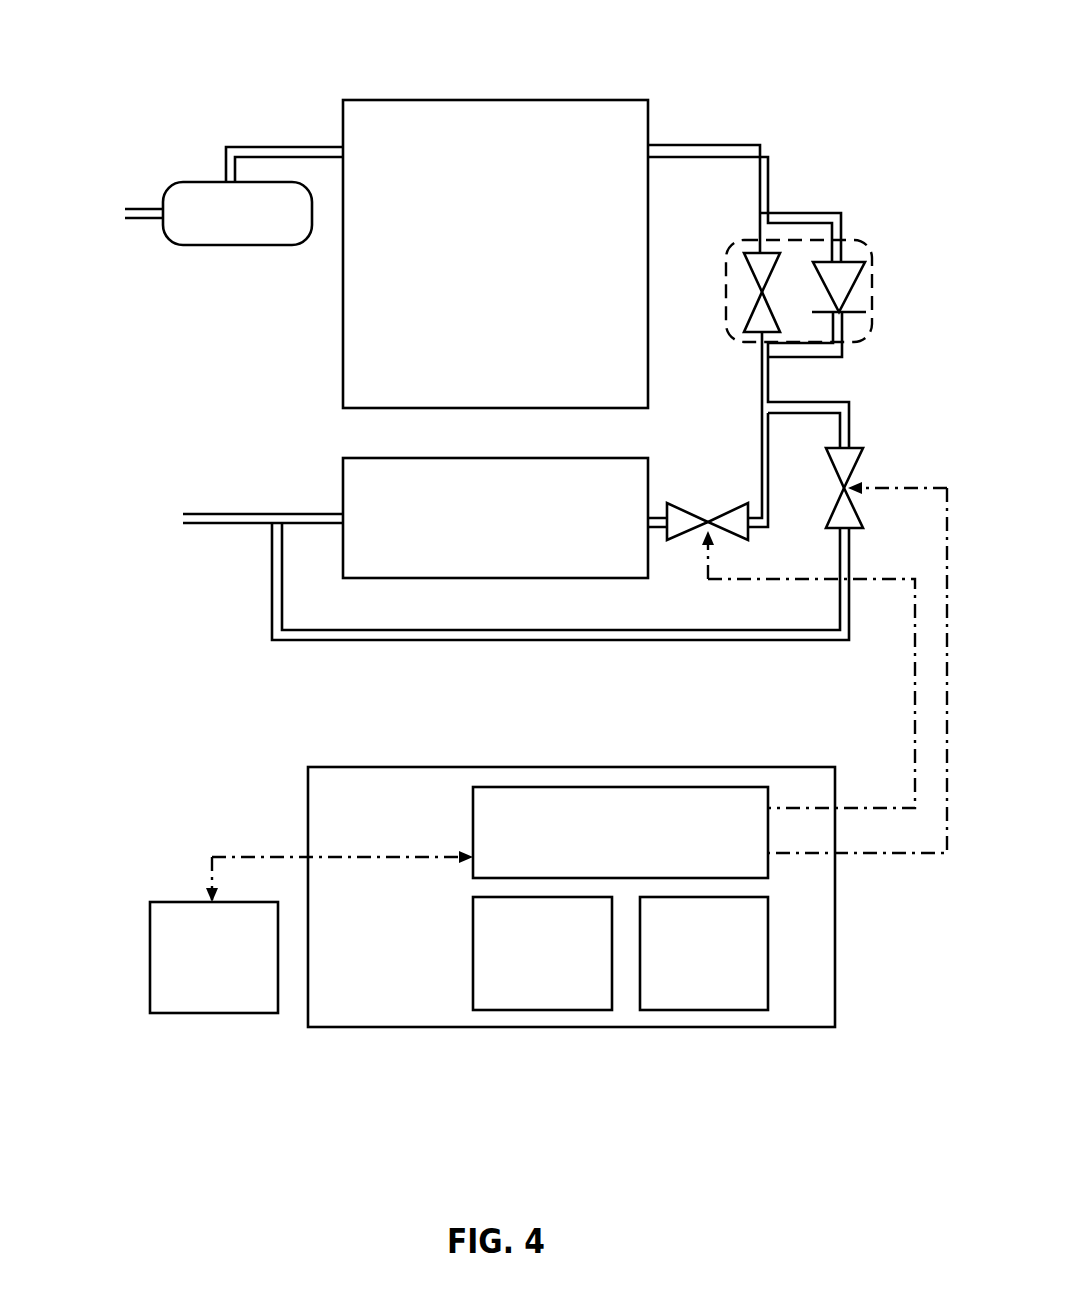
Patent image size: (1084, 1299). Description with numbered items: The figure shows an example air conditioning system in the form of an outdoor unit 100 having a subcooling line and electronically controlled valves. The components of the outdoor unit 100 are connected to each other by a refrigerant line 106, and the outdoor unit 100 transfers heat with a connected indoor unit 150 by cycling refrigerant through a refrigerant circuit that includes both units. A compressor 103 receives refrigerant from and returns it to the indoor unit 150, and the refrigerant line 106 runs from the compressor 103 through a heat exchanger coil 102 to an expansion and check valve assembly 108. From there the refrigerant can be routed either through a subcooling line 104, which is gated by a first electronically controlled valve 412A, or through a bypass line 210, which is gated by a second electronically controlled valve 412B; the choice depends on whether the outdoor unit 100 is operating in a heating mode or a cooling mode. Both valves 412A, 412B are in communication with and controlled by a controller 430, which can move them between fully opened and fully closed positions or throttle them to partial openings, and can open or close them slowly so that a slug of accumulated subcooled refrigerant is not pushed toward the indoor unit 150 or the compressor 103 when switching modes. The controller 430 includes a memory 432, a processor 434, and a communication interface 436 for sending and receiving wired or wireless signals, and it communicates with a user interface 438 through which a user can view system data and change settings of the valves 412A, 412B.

The outdoor unit 100 is at (320, 42).
The heat exchanger coil 102 is at (476, 279).
The compressor 103 is at (217, 237).
The subcooling line 104 is at (476, 544).
The refrigerant line 106 is at (728, 144).
The expansion and check valve assembly 108 is at (873, 266).
The indoor unit 150 is at (57, 283).
The bypass line 210 is at (655, 641).
The first electronically controlled valve 412A is at (700, 502).
The second electronically controlled valve 412B is at (860, 448).
The controller 430 is at (370, 942).
The memory 432 is at (522, 979).
The processor 434 is at (684, 979).
The communication interface 436 is at (601, 859).
The user interface 438 is at (194, 999).